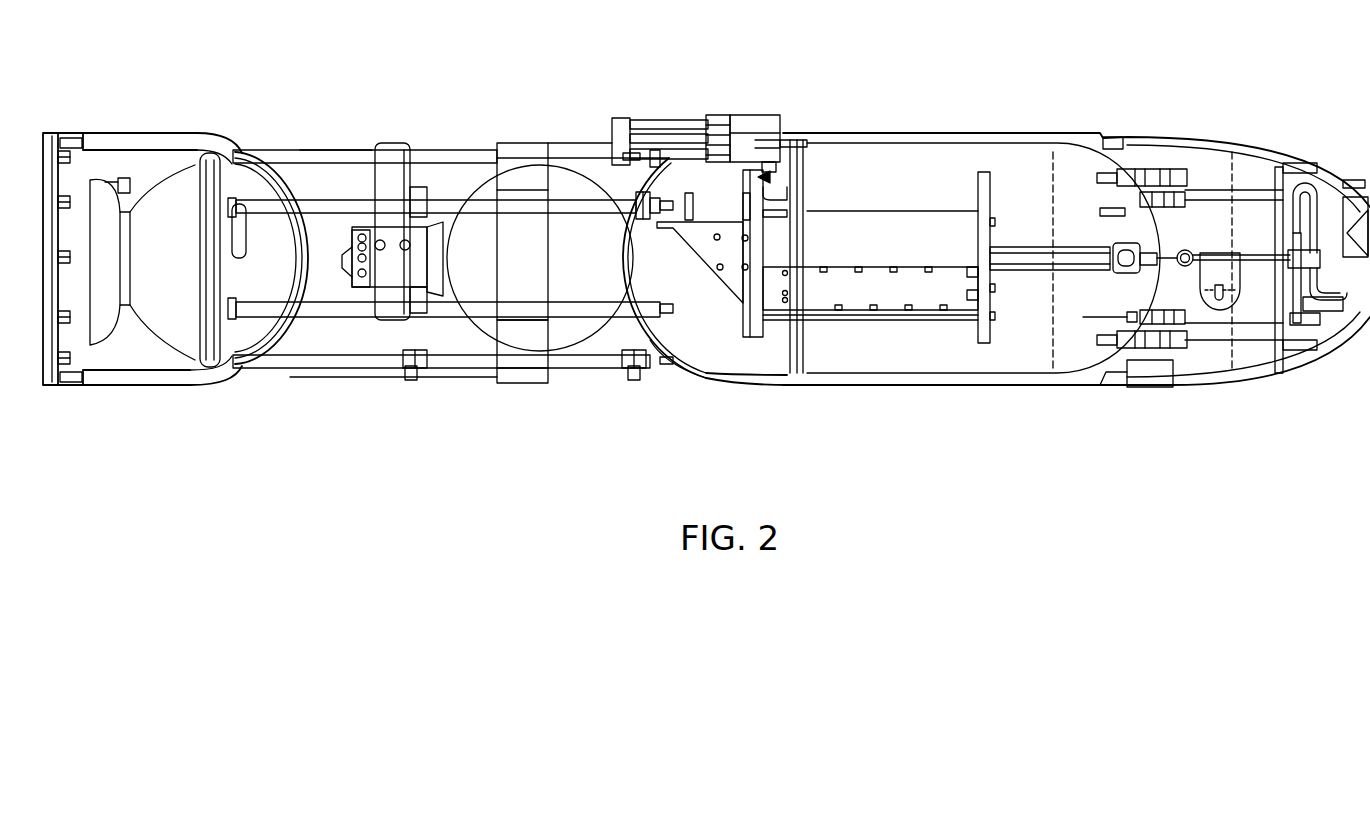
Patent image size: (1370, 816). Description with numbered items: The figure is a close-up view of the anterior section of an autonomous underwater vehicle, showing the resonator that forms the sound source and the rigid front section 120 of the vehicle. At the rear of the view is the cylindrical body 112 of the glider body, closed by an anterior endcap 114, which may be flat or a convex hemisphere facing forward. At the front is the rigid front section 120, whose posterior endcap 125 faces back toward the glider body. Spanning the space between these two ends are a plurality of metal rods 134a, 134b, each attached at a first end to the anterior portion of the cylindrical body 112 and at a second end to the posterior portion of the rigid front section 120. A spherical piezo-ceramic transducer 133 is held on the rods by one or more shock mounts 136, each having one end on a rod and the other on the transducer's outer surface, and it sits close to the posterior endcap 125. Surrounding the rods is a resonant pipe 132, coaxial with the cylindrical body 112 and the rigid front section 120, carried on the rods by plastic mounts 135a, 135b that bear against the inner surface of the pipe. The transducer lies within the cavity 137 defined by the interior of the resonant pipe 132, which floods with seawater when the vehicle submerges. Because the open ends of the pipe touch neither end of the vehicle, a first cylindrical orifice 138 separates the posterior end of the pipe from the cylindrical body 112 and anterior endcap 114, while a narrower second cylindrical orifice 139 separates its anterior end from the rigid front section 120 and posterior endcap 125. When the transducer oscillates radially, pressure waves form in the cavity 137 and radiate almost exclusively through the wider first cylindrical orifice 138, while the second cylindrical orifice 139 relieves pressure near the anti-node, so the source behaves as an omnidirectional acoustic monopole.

The cylindrical body 112 is at (111, 132).
The anterior endcap 114 is at (286, 356).
The rigid front section 120 is at (1056, 116).
The posterior endcap 125 is at (693, 355).
The resonant pipe 132 is at (516, 140).
The spherical piezo-ceramic transducer 133 is at (568, 190).
The metal rod 134a is at (274, 150).
The metal rod 134b is at (326, 366).
The plastic mount 135a is at (410, 382).
The plastic mount 135b is at (632, 380).
The shock mount 136 is at (540, 360).
The cavity 137 is at (338, 237).
The first cylindrical orifice 138 is at (323, 126).
The second cylindrical orifice 139 is at (656, 398).